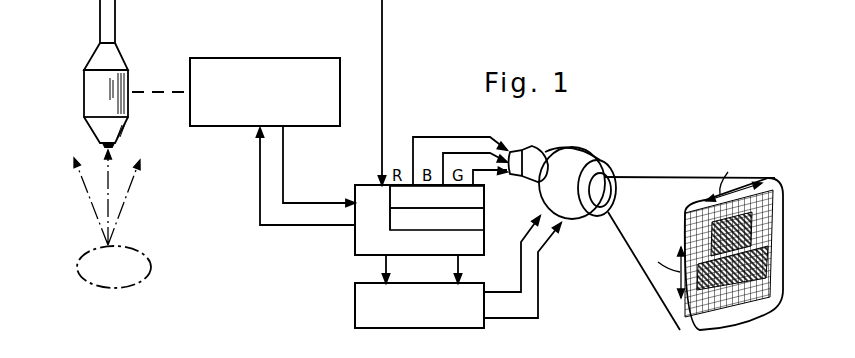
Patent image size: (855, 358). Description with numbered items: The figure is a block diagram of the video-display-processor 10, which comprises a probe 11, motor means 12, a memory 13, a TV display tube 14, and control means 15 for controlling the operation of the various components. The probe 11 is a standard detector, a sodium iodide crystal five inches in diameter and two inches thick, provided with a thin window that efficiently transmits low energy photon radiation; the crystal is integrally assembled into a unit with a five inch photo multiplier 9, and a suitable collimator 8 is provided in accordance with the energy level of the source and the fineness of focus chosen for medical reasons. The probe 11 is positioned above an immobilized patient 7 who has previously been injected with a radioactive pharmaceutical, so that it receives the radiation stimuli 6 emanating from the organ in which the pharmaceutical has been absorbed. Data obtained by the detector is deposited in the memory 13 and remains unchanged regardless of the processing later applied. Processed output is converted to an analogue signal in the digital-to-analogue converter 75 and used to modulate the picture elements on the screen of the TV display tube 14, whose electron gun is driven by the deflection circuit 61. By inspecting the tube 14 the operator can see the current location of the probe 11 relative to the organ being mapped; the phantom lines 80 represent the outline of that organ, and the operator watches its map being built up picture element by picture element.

The radiation stimuli 6 is at (130, 196).
The immobilized patient 7 is at (148, 256).
The collimator 8 is at (100, 130).
The photo multiplier 9 is at (113, 60).
The video-display-processor 10 is at (583, 126).
The probe 11 is at (90, 98).
The motor means 12 is at (340, 88).
The memory 13 is at (484, 218).
The TV display tube 14 is at (770, 178).
The means for controlling operation 15 is at (355, 247).
The deflection circuit 61 is at (355, 310).
The digital-to-analogue converter 75 is at (484, 198).
The phantom lines 80 is at (720, 285).